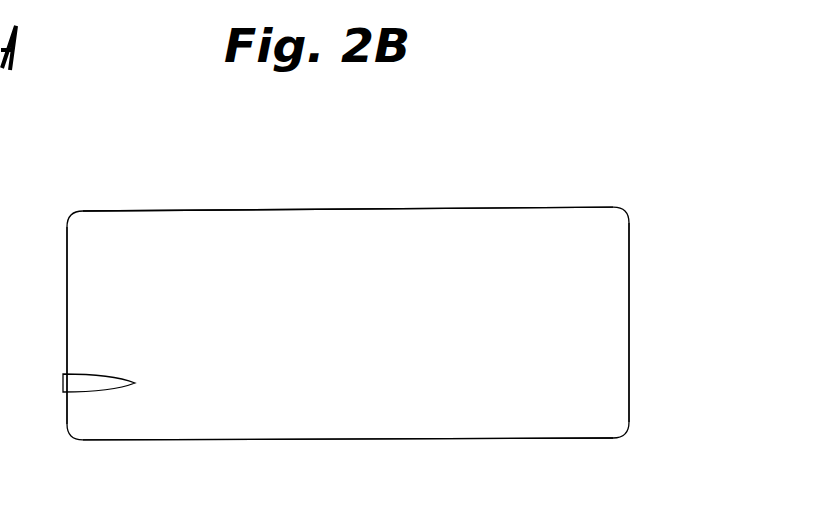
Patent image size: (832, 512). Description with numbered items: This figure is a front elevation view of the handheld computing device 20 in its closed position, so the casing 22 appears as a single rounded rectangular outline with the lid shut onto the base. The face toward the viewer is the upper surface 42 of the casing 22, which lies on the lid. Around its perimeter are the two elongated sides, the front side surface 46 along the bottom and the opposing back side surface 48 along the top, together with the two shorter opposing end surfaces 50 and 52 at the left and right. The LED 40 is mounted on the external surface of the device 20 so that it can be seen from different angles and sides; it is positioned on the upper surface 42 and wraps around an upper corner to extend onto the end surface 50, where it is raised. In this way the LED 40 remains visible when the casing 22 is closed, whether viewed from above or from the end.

The handheld computing device 20 is at (432, 109).
The casing 22 is at (513, 223).
The LED 40 is at (77, 383).
The upper surface 42 is at (343, 334).
The front side surface 46 is at (348, 438).
The back side surface 48 is at (330, 209).
The end surface 50 is at (67, 325).
The end surface 52 is at (629, 307).